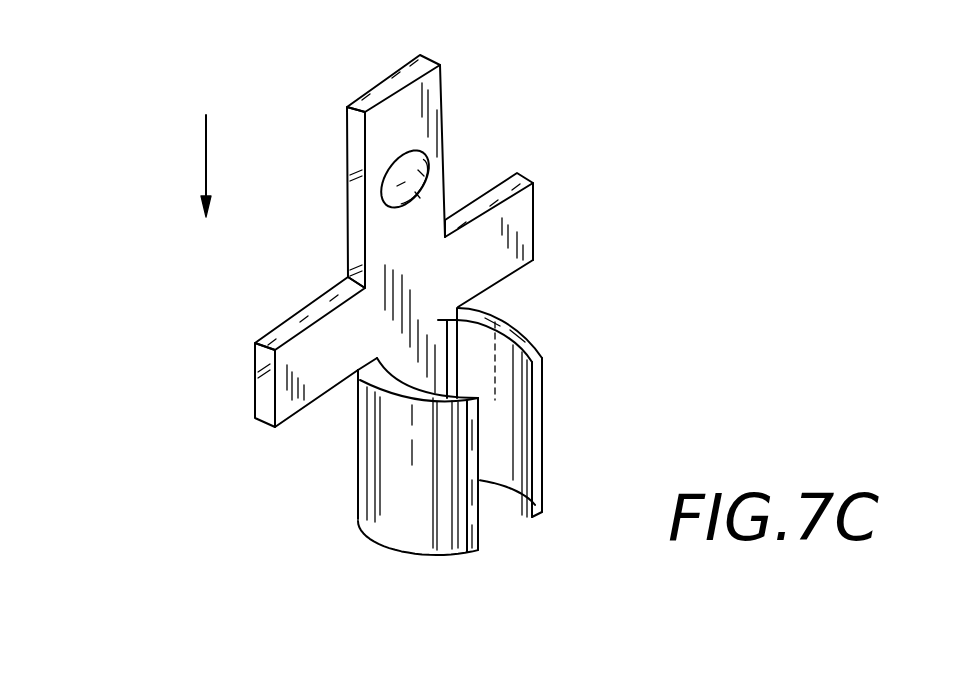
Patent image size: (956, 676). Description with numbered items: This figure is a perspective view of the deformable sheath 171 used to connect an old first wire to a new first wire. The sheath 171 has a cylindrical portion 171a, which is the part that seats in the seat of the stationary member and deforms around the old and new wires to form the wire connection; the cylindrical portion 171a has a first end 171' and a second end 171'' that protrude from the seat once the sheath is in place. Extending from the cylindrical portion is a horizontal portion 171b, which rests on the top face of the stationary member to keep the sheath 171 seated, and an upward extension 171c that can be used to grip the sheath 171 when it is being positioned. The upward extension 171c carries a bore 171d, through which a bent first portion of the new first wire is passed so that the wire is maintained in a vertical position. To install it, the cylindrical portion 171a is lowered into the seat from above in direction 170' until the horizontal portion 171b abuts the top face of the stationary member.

The direction 170' is at (120, 214).
The sheath 171 is at (492, 321).
The cylindrical portion 171a is at (417, 535).
The horizontal portion 171b is at (518, 213).
The upward extension 171c is at (435, 97).
The bore 171d is at (432, 183).
The first end 171' is at (500, 446).
The second end 171'' is at (551, 412).